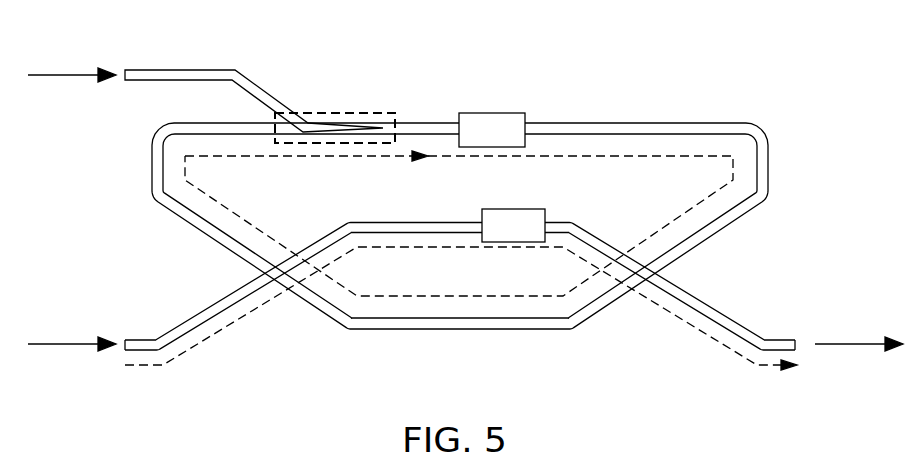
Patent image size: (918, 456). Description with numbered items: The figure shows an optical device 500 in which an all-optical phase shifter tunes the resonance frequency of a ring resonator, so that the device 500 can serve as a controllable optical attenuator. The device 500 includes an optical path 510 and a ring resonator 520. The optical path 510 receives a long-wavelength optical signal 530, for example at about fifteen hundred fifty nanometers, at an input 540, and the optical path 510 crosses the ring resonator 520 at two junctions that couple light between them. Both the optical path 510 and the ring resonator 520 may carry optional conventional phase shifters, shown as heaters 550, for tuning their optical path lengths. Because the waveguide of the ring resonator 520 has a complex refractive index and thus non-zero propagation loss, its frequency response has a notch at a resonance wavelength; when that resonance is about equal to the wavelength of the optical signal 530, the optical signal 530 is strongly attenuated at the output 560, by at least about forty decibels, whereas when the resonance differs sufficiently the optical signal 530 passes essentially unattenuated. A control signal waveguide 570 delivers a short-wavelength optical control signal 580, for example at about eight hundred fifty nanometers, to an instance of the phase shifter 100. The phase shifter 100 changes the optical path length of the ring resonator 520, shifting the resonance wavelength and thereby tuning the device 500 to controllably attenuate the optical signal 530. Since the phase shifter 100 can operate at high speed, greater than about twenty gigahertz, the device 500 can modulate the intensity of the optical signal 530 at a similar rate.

The phase shifter 100 is at (332, 112).
The optical device 500 is at (677, 76).
The optical path 510 is at (212, 307).
The ring resonator 520 is at (300, 160).
The optical signal 530 is at (60, 348).
The input 540 is at (114, 348).
The heaters 550 is at (492, 113).
The output 560 is at (794, 349).
The control signal waveguide 570 is at (170, 70).
The optical control signal 580 is at (60, 72).